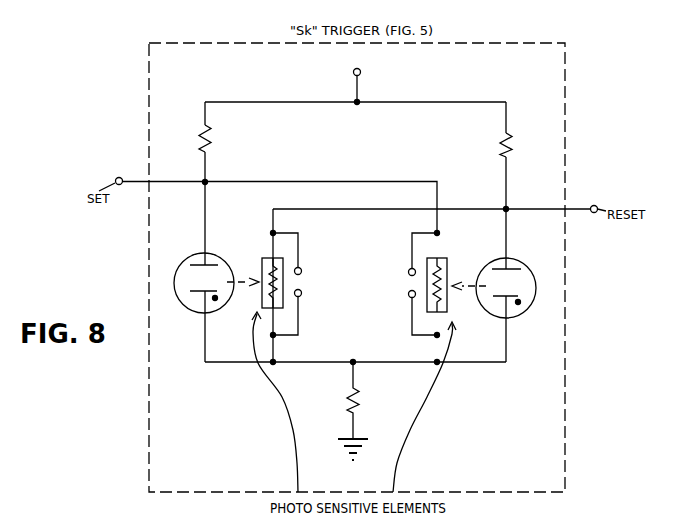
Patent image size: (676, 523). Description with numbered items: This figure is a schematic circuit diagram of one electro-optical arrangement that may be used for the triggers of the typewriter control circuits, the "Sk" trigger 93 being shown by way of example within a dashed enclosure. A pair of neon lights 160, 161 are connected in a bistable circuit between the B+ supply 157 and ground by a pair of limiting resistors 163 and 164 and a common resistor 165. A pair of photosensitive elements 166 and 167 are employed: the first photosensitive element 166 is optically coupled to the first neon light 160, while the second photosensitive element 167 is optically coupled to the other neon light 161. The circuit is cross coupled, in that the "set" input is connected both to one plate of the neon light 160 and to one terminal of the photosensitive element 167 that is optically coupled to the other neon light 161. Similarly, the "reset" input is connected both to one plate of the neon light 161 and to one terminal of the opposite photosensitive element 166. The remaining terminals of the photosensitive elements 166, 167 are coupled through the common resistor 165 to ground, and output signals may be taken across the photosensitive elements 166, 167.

The "Sk" trigger 93 is at (565, 70).
The B+ supply 157 is at (361, 73).
The neon light 160 is at (212, 256).
The neon light 161 is at (498, 260).
The limiting resistor 163 is at (212, 141).
The limiting resistor 164 is at (487, 142).
The common resistor 165 is at (358, 403).
The photosensitive element 166 is at (261, 300).
The photosensitive element 167 is at (447, 313).